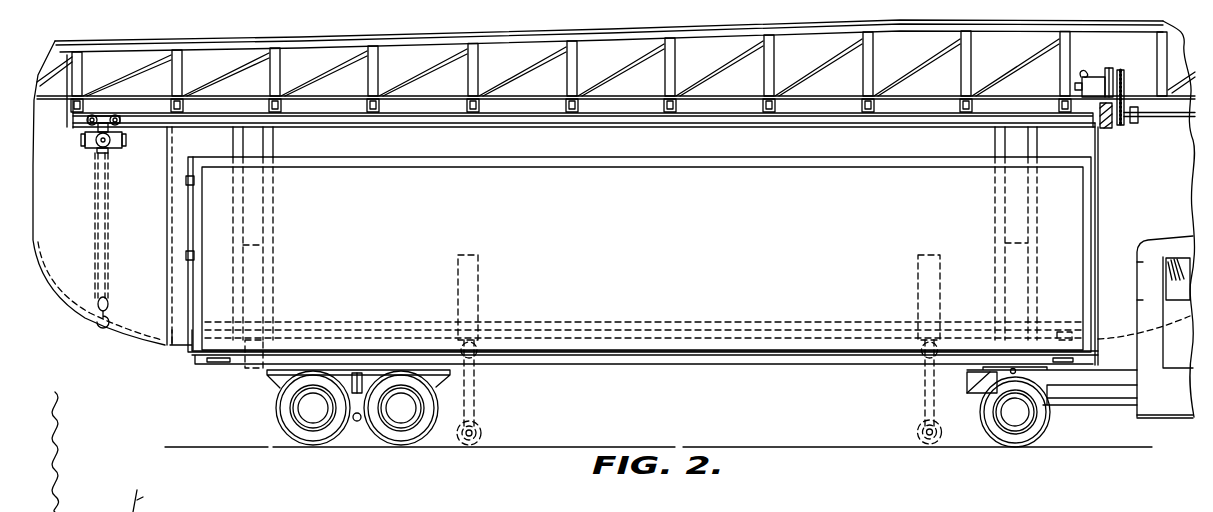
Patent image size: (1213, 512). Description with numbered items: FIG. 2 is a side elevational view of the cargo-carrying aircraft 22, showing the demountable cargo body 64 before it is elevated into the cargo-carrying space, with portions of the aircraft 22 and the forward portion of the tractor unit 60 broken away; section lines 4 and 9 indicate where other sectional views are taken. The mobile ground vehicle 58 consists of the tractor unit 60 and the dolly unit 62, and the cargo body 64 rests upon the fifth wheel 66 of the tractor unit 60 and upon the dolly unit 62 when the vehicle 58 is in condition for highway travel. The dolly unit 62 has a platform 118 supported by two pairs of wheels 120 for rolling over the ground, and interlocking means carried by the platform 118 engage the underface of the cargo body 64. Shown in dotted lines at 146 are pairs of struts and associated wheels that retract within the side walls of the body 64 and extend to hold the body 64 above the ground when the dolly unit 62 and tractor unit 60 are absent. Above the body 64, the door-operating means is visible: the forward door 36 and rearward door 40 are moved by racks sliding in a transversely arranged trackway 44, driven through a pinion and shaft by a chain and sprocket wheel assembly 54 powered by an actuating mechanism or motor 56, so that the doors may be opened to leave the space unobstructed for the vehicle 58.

The section line 4- 4 is at (252, 75).
The section line 9- 9 is at (220, 313).
The cargo-carrying aircraft 22 is at (67, 288).
The door 36 is at (1072, 253).
The door 40 is at (149, 336).
The trackway 44 is at (1112, 128).
The chain and sprocket wheel assembly 54 is at (1123, 83).
The actuating mechanism or motor 56 is at (1100, 75).
The mobile ground vehicle 58 is at (1172, 419).
The tractor unit 60 is at (1116, 397).
The dolly unit 62 is at (450, 376).
The demountable cargo body 64 is at (654, 365).
The fifth wheel 66 is at (993, 369).
The platform 118 is at (279, 371).
The wheels 120 is at (281, 408).
The struts and associated wheels 146 is at (923, 385).